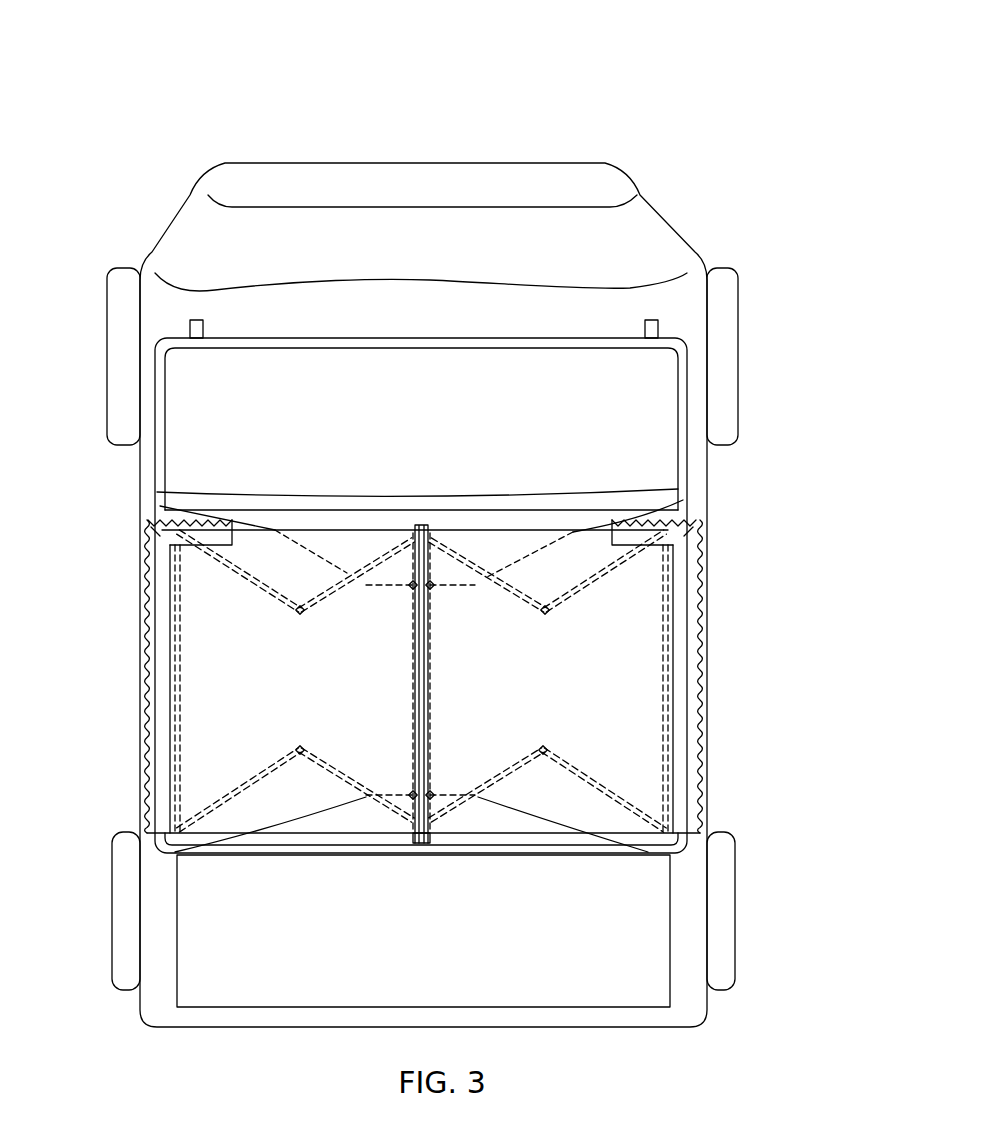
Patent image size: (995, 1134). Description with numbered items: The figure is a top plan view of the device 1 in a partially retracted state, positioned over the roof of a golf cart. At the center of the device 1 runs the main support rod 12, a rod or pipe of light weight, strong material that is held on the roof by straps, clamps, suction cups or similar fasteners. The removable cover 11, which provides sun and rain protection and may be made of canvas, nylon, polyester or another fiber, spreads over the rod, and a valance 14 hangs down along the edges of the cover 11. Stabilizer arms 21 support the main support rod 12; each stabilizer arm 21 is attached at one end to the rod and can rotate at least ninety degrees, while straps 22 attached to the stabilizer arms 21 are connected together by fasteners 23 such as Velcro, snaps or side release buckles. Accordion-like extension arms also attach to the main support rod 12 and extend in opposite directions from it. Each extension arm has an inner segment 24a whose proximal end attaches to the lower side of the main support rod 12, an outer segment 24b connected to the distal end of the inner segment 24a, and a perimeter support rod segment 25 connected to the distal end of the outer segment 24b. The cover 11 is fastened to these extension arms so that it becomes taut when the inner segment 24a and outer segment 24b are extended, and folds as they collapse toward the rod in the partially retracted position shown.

The device 1 is at (549, 96).
The removable cover 11 is at (203, 650).
The main support rod 12 is at (421, 525).
The valance 14 is at (143, 545).
The stabilizer arms 21 is at (388, 585).
The straps 22 is at (153, 520).
The fasteners 23 is at (448, 496).
The inner segment 24a is at (338, 588).
The outer segment 24b is at (268, 592).
The perimeter support rod segment 25 is at (177, 588).